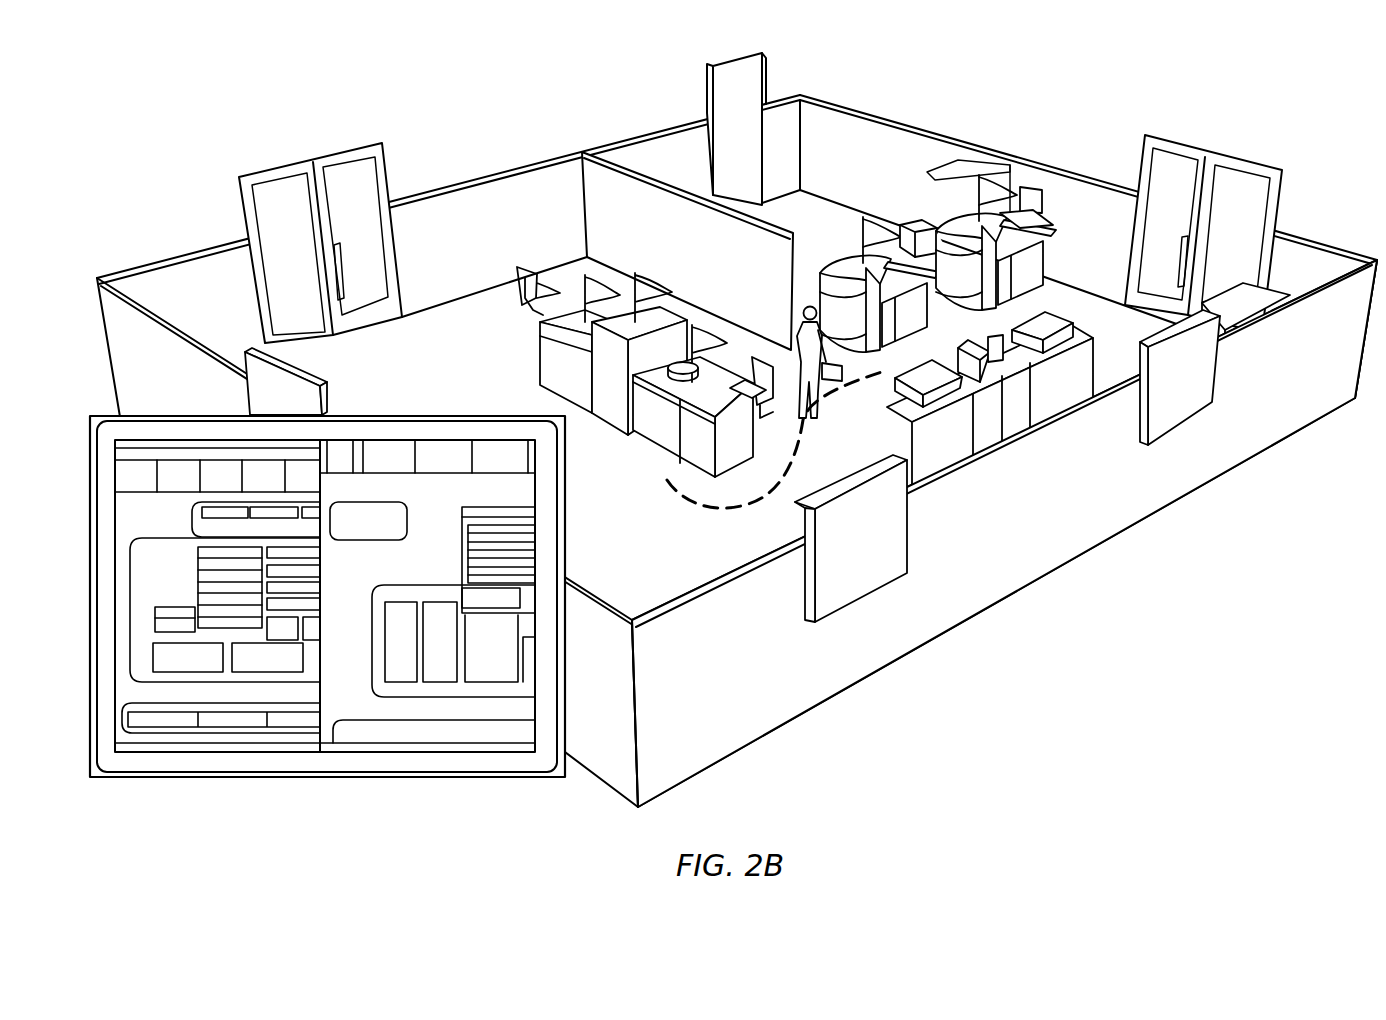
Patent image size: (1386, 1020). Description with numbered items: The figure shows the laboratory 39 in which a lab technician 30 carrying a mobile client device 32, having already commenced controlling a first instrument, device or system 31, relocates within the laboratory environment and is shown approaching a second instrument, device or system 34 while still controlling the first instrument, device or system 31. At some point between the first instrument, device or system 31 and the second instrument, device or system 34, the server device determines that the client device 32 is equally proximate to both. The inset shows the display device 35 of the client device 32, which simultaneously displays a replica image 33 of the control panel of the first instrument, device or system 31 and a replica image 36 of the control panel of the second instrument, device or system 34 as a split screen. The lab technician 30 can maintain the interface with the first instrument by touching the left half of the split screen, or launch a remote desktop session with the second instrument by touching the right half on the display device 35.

The laboratory 39 is at (1096, 118).
The display device 35 is at (175, 414).
The second instrument, device or system 34 is at (832, 257).
The lab technician 30 is at (806, 300).
The first instrument, device or system 31 is at (657, 443).
The mobile client device 32 is at (842, 388).
The replica image 33 is at (218, 688).
The replica image 36 is at (437, 708).